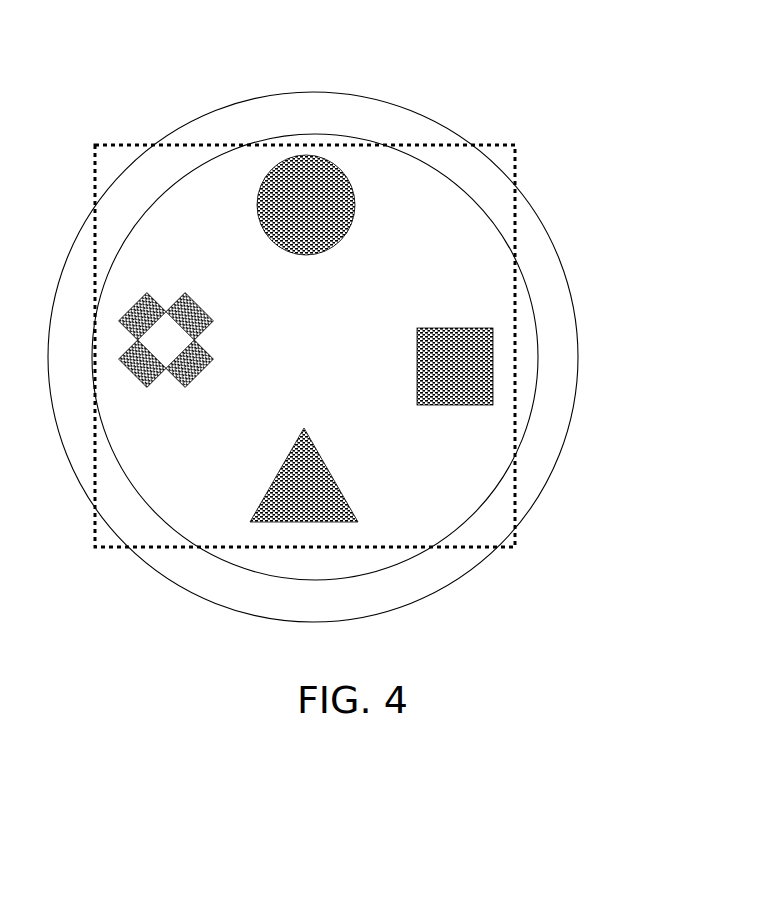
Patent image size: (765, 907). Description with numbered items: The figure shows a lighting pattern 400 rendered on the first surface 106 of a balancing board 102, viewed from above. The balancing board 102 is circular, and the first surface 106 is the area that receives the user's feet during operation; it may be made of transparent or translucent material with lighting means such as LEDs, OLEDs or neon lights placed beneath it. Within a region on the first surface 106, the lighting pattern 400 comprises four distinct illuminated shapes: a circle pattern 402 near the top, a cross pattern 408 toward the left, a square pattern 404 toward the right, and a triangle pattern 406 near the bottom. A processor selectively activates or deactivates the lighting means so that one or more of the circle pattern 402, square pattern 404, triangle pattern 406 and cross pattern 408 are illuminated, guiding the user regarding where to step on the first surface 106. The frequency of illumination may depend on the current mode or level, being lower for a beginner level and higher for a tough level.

The lighting pattern 400 is at (485, 145).
The balancing board 102 is at (578, 357).
The first surface 106 is at (495, 307).
The circle pattern 402 is at (334, 216).
The square pattern 404 is at (427, 366).
The triangle pattern 406 is at (323, 475).
The cross pattern 408 is at (197, 346).